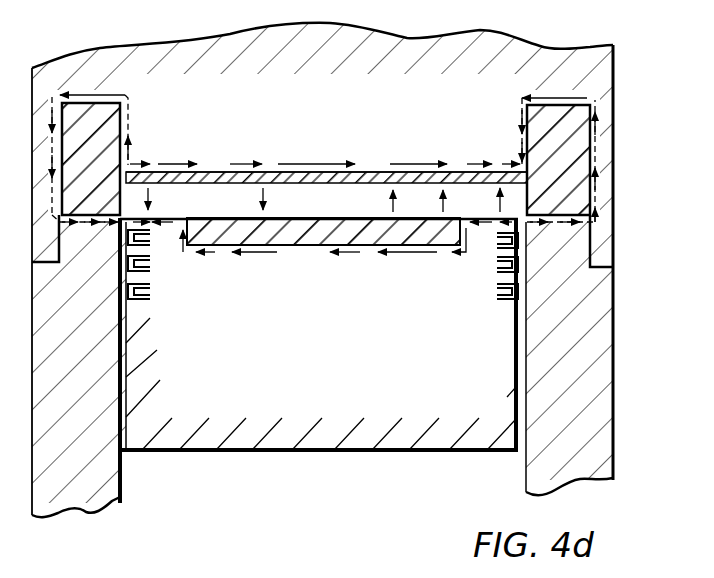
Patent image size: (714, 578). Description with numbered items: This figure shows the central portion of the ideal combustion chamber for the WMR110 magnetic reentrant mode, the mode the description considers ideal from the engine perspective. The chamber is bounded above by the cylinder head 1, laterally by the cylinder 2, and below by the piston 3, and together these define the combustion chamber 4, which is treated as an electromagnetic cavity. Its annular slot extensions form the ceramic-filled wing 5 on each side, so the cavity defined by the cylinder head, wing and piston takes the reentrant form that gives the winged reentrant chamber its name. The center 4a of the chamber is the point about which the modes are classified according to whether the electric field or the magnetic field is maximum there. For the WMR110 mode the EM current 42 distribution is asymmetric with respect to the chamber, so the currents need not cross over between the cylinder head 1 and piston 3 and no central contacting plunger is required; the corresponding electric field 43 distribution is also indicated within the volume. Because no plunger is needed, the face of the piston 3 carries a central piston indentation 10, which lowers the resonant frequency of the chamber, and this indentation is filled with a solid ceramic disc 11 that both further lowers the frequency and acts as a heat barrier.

The cylinder head 1 is at (357, 289).
The cylinder 2 is at (569, 355).
The piston 3 is at (319, 334).
The combustion chamber 4 is at (366, 183).
The center of the combustion chamber 4a is at (366, 180).
The wing 5 is at (594, 153).
The central piston indentation 10 is at (318, 242).
The ceramic disc 11 is at (265, 232).
The asymmetric currents 42 is at (300, 170).
The electric field distribution 43 is at (206, 204).